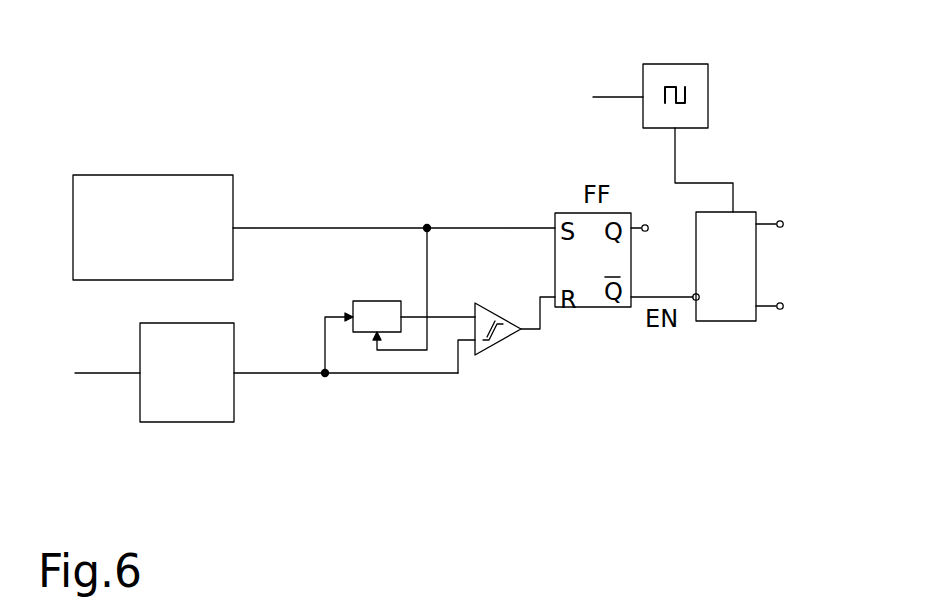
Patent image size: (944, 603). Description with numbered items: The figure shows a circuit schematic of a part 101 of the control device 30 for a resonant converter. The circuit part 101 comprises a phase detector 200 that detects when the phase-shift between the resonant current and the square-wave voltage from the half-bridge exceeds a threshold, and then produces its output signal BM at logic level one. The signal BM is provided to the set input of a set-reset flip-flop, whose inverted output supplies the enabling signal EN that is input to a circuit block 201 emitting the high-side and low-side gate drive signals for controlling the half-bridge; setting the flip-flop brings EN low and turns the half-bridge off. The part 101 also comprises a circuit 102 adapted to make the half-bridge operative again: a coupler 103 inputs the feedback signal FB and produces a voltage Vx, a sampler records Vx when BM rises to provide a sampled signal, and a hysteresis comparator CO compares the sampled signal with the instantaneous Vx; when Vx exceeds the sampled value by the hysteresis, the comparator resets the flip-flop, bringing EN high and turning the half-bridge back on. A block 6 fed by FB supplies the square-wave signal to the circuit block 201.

The control device 30 is at (105, 132).
The circuit part 101 is at (349, 136).
The circuit 102 is at (538, 412).
The coupler 103 is at (212, 323).
The phase detector 200 is at (160, 175).
The circuit block 201 is at (756, 282).
The pulse generator 6 is at (708, 82).